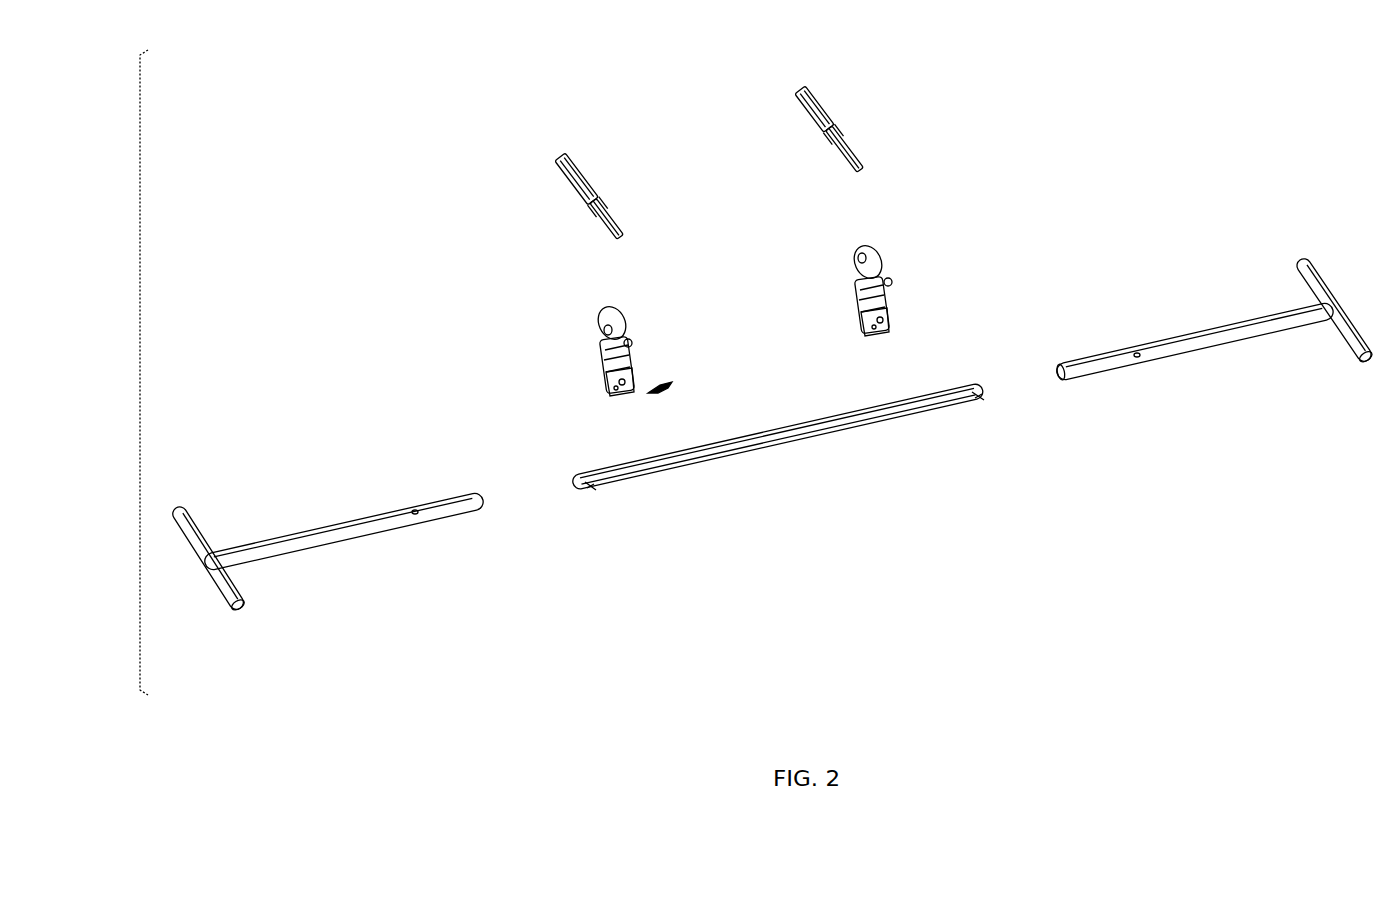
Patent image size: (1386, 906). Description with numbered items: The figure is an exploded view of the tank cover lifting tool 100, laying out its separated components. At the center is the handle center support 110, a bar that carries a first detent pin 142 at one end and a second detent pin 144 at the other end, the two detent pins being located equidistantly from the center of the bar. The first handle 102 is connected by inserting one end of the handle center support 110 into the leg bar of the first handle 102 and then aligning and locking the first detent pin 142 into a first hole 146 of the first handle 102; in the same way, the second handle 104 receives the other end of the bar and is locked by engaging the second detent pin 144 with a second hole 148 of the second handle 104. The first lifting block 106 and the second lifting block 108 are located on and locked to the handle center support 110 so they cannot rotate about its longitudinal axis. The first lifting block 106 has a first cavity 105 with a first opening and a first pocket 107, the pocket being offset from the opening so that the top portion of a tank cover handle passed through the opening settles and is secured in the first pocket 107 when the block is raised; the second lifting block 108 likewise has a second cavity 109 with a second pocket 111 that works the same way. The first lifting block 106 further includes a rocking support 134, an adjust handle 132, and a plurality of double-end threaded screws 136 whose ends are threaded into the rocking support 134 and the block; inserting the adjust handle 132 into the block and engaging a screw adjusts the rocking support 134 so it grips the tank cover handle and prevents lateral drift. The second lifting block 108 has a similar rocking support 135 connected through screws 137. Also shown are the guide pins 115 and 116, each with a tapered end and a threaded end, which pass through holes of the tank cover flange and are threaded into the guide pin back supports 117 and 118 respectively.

The tank cover lifting tool 100 is at (139, 372).
The first handle 102 is at (220, 585).
The second handle 104 is at (1272, 330).
The first cavity 105 is at (600, 322).
The first lifting block 106 is at (606, 312).
The first pocket 107 is at (630, 344).
The second lifting block 108 is at (874, 256).
The second cavity 109 is at (857, 256).
The handle center support 110 is at (776, 446).
The second pocket 111 is at (891, 280).
The guide pin 115 is at (598, 230).
The guide pin 116 is at (850, 152).
The guide pin back support 117 is at (562, 160).
The guide pin back support 118 is at (828, 98).
The adjust handle 132 is at (656, 396).
The rocking support 134 is at (606, 388).
The rocking support 135 is at (870, 340).
The screws 136 is at (638, 385).
The screws 137 is at (896, 326).
The first detent pin 142 is at (592, 490).
The second detent pin 144 is at (980, 398).
The first hole 146 is at (416, 514).
The second hole 148 is at (1138, 358).